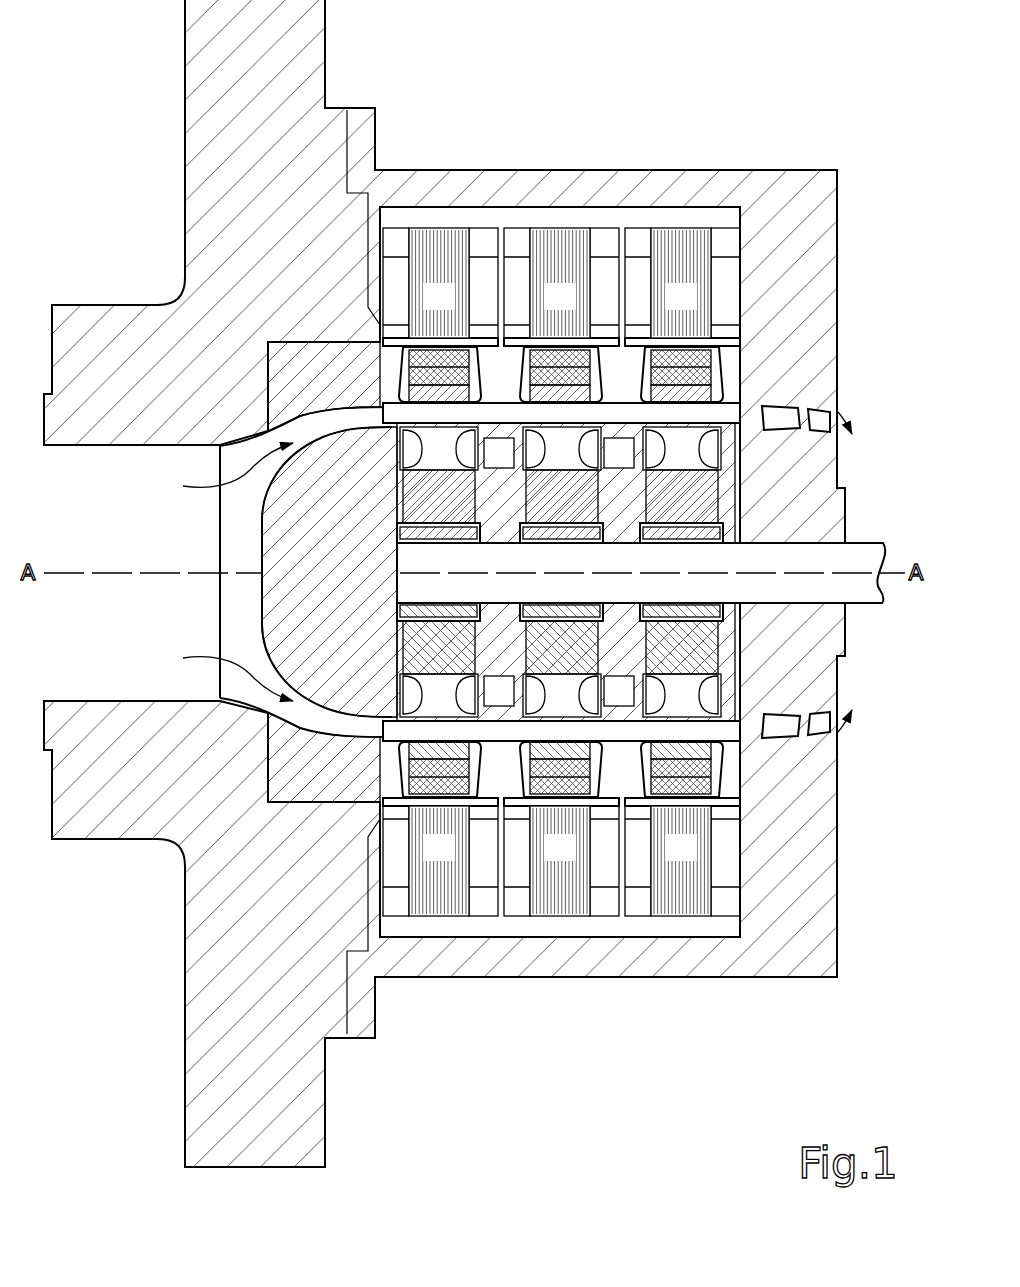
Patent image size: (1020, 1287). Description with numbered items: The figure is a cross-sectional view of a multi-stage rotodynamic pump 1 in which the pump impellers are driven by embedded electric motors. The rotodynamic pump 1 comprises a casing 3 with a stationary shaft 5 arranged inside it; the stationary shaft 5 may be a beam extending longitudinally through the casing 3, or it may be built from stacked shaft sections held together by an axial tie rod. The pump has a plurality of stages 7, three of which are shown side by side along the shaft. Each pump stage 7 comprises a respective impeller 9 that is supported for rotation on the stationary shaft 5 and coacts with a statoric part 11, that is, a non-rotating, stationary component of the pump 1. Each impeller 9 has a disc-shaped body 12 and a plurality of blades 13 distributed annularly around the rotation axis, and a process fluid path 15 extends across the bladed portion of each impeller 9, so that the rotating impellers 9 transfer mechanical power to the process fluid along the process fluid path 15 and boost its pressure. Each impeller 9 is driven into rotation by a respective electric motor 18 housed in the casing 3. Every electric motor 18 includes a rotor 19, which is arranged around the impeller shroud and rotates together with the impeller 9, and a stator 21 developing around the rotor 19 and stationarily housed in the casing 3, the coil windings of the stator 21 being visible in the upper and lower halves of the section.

The rotodynamic pump 1 is at (495, 1045).
The casing 3 is at (735, 185).
The stationary shaft 5 is at (848, 554).
The pump stage 7 is at (443, 224).
The impeller 9 is at (408, 458).
The statoric part 11 is at (862, 784).
The disc-shaped body 12 is at (398, 487).
The blades 13 is at (712, 406).
The process fluid path 15 is at (232, 492).
The electric motor 18 is at (716, 352).
The rotor 19 is at (410, 352).
The stator 21 is at (693, 859).